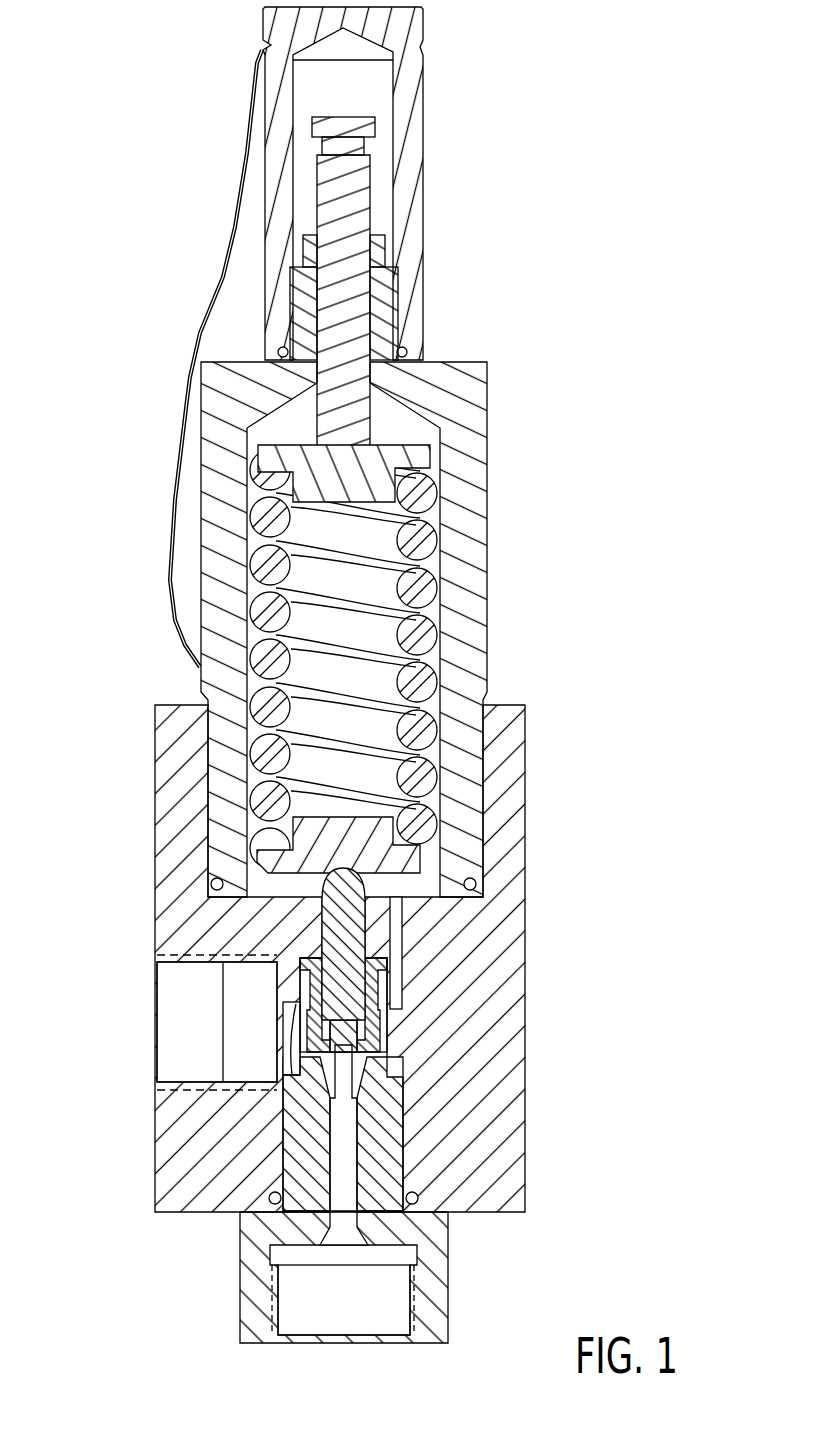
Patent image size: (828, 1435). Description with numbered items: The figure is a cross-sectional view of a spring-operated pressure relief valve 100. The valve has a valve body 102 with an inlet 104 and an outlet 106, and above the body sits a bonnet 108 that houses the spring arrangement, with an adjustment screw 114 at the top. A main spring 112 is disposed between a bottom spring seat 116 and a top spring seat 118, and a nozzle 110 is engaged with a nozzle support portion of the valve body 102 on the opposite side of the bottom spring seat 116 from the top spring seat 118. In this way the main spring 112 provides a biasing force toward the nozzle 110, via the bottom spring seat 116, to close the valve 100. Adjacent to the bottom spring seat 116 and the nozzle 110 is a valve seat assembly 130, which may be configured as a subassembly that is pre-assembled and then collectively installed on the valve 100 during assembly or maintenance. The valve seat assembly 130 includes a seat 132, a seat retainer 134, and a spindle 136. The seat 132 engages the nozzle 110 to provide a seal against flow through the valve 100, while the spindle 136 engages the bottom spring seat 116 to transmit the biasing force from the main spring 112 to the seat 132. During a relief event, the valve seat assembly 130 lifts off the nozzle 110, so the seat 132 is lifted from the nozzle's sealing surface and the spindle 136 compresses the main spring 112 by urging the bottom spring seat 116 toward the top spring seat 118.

The spring-operated pressure relief valve 100 is at (190, 46).
The valve body 102 is at (527, 985).
The inlet 104 is at (325, 1318).
The outlet 106 is at (188, 999).
The bonnet 108 is at (487, 525).
The nozzle 110 is at (448, 1278).
The main spring 112 is at (267, 655).
The adjustment screw 114 is at (358, 135).
The bottom spring seat 116 is at (418, 860).
The top spring seat 118 is at (262, 448).
The valve seat assembly 130 is at (310, 952).
The seat 132 is at (340, 1035).
The seat retainer 134 is at (383, 1023).
The spindle 136 is at (357, 913).